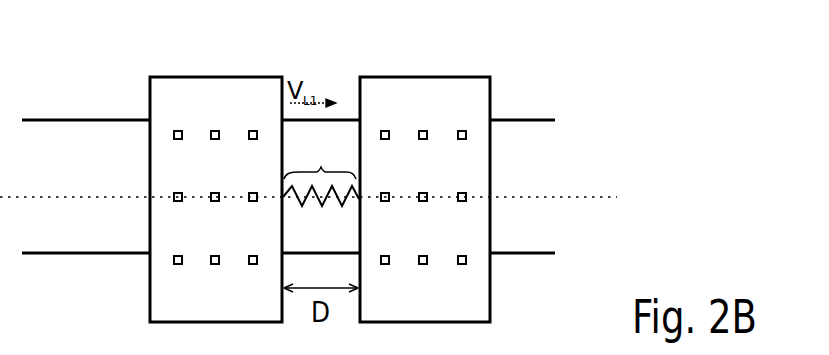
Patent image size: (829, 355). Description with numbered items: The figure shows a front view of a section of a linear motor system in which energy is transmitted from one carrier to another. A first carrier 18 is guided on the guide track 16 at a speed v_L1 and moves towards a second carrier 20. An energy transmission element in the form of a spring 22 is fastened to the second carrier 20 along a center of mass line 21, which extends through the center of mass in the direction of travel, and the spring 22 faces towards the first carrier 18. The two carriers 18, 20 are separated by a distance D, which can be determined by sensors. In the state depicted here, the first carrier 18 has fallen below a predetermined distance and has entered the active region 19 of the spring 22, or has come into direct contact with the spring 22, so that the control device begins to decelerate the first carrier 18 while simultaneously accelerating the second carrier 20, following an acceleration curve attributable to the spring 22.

The first carrier 18 is at (212, 100).
The second carrier 20 is at (440, 103).
The guide track 16 is at (528, 150).
The center of mass line 21 is at (592, 200).
The active region 19 is at (321, 197).
The spring 22 is at (307, 205).